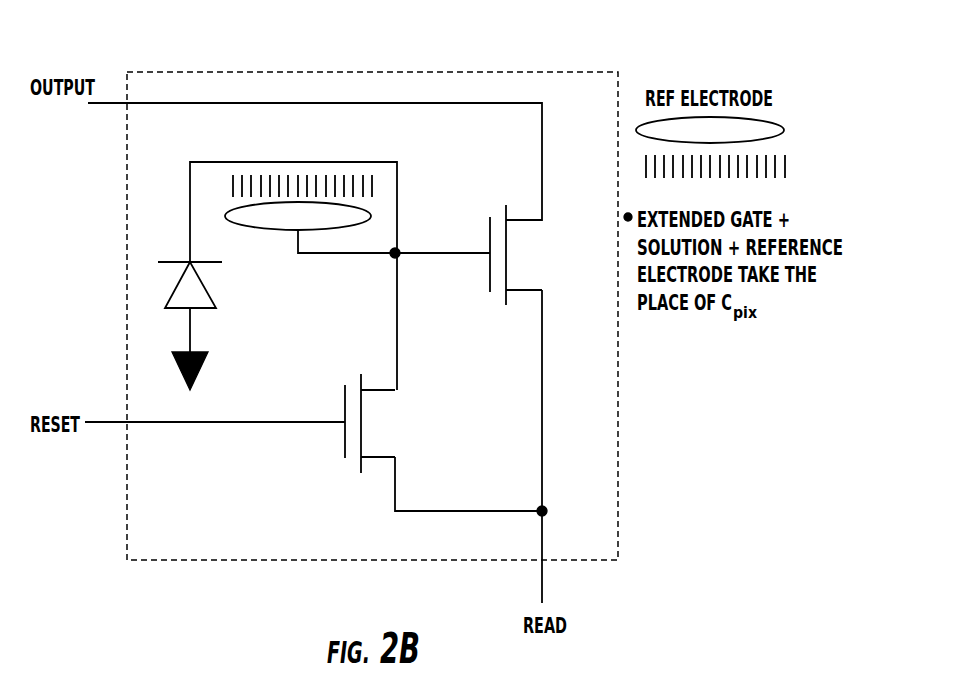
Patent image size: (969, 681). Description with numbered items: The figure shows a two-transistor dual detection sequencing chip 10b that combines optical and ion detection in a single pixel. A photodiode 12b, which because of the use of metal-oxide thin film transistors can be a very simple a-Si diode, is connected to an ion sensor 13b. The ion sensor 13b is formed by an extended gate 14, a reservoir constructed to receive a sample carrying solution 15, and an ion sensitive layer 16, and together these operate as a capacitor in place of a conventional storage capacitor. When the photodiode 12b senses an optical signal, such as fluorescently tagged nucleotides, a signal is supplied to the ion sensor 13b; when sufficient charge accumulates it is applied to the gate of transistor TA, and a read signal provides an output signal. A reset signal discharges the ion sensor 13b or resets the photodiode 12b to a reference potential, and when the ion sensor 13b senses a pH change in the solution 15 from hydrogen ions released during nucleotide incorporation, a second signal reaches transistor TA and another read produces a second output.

The dual detection sequencing chip 10b is at (565, 58).
The photodiode 12b is at (166, 297).
The ion sensor 13b is at (417, 148).
The extended gate 14 is at (376, 160).
The sample carrying solution 15 is at (232, 188).
The ion sensitive layer 16 is at (225, 215).